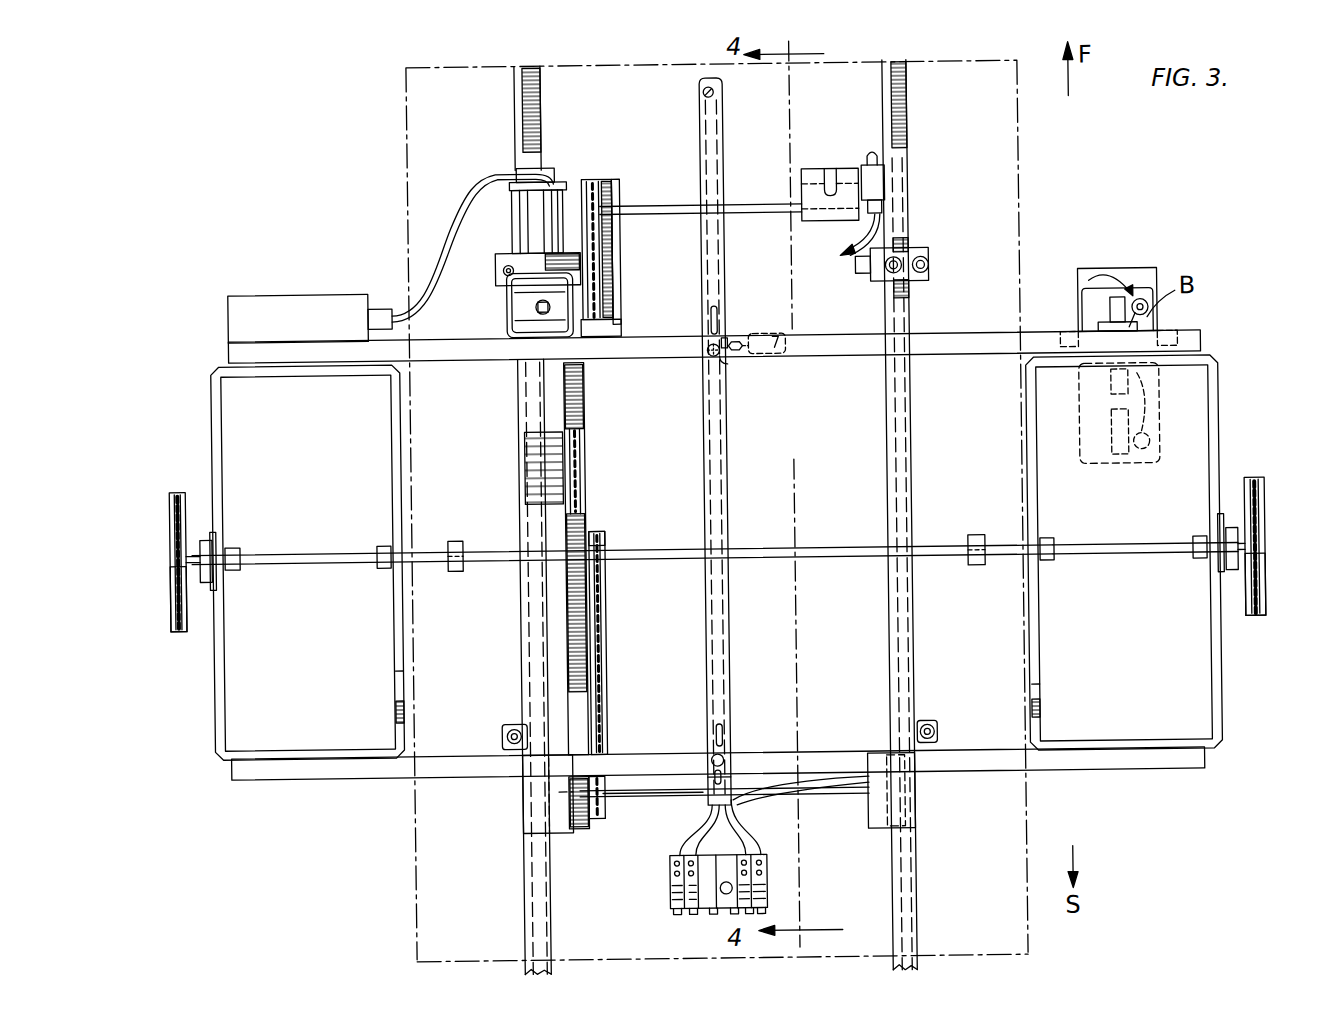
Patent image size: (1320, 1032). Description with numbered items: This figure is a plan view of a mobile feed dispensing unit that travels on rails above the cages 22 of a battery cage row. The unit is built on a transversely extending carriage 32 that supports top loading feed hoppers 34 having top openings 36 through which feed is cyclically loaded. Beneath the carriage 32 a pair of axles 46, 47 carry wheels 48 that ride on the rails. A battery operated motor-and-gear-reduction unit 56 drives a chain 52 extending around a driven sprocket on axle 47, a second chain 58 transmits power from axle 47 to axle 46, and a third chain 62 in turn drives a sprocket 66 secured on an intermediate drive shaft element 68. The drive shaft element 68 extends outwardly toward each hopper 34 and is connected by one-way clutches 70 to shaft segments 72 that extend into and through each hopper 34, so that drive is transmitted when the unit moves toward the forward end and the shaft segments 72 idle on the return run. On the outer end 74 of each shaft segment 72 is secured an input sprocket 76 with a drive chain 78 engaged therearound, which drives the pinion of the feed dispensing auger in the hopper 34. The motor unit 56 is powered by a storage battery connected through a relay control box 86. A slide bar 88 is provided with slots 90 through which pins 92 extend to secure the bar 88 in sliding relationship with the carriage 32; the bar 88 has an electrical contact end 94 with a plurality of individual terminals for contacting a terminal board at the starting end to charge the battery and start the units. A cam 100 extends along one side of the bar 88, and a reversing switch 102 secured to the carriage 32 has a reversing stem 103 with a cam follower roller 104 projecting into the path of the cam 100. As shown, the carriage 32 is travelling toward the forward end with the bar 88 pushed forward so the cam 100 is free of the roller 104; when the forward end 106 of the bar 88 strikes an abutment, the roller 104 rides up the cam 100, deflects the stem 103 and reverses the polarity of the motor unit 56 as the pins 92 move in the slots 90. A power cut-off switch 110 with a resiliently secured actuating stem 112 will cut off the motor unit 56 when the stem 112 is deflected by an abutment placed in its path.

The cage 22 is at (420, 156).
The carriage 32 is at (945, 336).
The feed hopper 34 is at (213, 708).
The top opening 36 is at (243, 432).
The axle 46 is at (643, 797).
The axle 47 is at (746, 205).
The wheel 48 is at (536, 818).
The chain 52 is at (604, 272).
The motor-and-gear-reduction unit 56 is at (491, 272).
The second chain 58 is at (586, 462).
The third chain 62 is at (607, 665).
The sprocket 66 is at (600, 542).
The intermediate drive shaft element 68 is at (660, 548).
The one-way clutch 70 is at (456, 538).
The shaft segment 72 is at (420, 548).
The outer end 74 is at (192, 556).
The input sprocket 76 is at (178, 565).
The drive chain 78 is at (175, 608).
The relay control box 86 is at (282, 329).
The slide bar 88 is at (730, 438).
The slot 90 is at (712, 318).
The pin 92 is at (708, 356).
The electrical contact end 94 is at (666, 878).
The cam 100 is at (730, 336).
The reversing switch 102 is at (790, 334).
The reversing stem 103 is at (744, 332).
The cam follower roller 104 is at (736, 360).
The forward end 106 is at (722, 92).
The power cut-off switch 110 is at (882, 182).
The actuating stem 112 is at (836, 170).